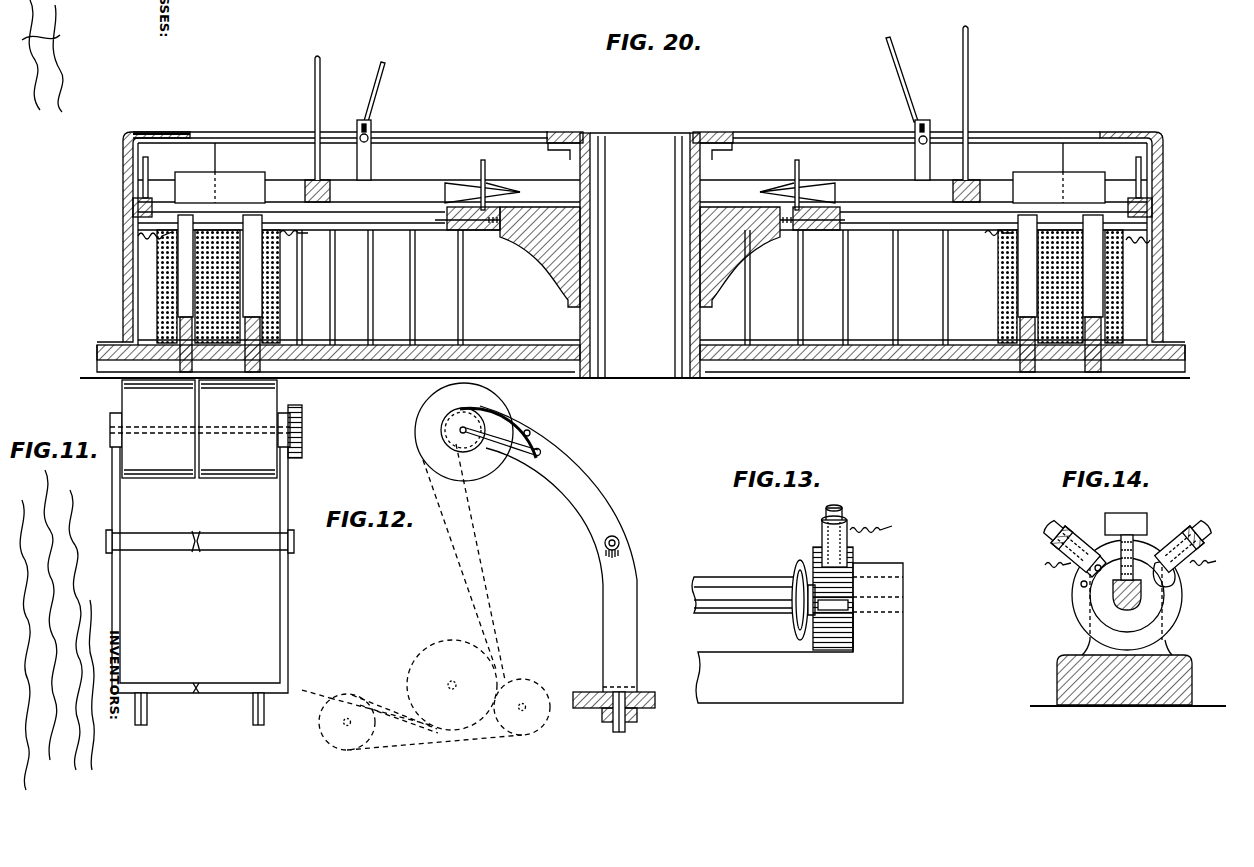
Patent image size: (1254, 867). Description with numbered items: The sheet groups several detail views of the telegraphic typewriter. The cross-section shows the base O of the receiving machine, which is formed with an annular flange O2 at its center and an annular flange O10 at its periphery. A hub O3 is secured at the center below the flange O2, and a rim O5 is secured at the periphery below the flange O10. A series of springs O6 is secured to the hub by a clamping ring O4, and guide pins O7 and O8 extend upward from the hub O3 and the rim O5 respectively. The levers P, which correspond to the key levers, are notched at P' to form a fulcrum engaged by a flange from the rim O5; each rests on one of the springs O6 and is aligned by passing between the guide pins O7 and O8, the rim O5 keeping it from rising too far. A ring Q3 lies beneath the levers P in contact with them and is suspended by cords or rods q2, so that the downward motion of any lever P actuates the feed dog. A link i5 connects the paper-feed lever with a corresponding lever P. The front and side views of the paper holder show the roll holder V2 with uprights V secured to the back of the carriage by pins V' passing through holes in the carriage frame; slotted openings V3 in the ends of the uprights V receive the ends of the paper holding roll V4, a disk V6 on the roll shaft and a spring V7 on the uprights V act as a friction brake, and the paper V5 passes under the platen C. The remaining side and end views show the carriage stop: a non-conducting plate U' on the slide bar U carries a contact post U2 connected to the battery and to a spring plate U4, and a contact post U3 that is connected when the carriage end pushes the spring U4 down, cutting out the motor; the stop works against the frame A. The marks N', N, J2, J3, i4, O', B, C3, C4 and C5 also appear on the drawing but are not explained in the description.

In FIG. 20, the base O is at (635, 255).
In FIG. 20, the annular flange O10 is at (133, 134).
In FIG. 20, the annular flange O2 is at (551, 131).
In FIG. 20, the notch P' is at (645, 159).
In FIG. 20, the lever P is at (642, 172).
In FIG. 20, the magnet cores / armature boxes N' is at (640, 187).
In FIG. 20, the ring Q3 is at (331, 192).
In FIG. 20, the cords or rods q2 is at (320, 98).
In FIG. 20, the link i5 is at (380, 76).
In FIG. 20, the lever blocks / pivots i4 is at (371, 124).
In FIG. 20, the guide pin O8 is at (148, 163).
In FIG. 20, the rim O5 is at (133, 207).
In FIG. 20, the spring O' is at (633, 185).
In FIG. 20, the spring O6 is at (519, 193).
In FIG. 20, the guide pin O7 is at (805, 192).
In FIG. 20, the clamping ring O4 is at (458, 232).
In FIG. 20, the hub O3 is at (640, 257).
In FIG. 20, the magnet coils and posts N is at (642, 293).
In FIG. 20, the contact springs J2 is at (133, 236).
In FIG. 20, the contact springs J3 is at (297, 234).
In FIG. 11, the upright V is at (210, 553).
In FIG. 12, the upright V is at (558, 549).
In FIG. 11, the pin V' is at (199, 709).
In FIG. 12, the pin V' is at (612, 723).
In FIG. 11, the roll holder V2 is at (236, 540).
In FIG. 12, the roll holder V2 is at (606, 545).
In FIG. 12, the slotted opening V3 is at (462, 462).
In FIG. 11, the paper holding roll V4 is at (245, 426).
In FIG. 12, the paper holding roll V4 is at (470, 400).
In FIG. 12, the paper V5 is at (462, 558).
In FIG. 11, the disk V6 is at (302, 412).
In FIG. 12, the disk V6 is at (490, 408).
In FIG. 12, the spring V7 is at (515, 428).
In FIG. 12, the bracket B is at (640, 712).
In FIG. 12, the platen C is at (452, 685).
In FIG. 12, the pulley C3 is at (347, 725).
In FIG. 12, the pulley C4 is at (524, 710).
In FIG. 12, the belt C5 is at (482, 738).
In FIG. 13, the frame A is at (826, 690).
In FIG. 14, the frame A is at (1085, 682).
In FIG. 13, the slide bar U is at (747, 595).
In FIG. 14, the slide bar U is at (1087, 597).
In FIG. 13, the plate U' is at (833, 598).
In FIG. 14, the plate U' is at (1144, 540).
In FIG. 14, the contact post U2 is at (1055, 541).
In FIG. 13, the contact post U3 is at (822, 540).
In FIG. 14, the contact post U3 is at (1200, 541).
In FIG. 13, the spring plate U4 is at (793, 575).
In FIG. 14, the spring plate U4 is at (1165, 626).